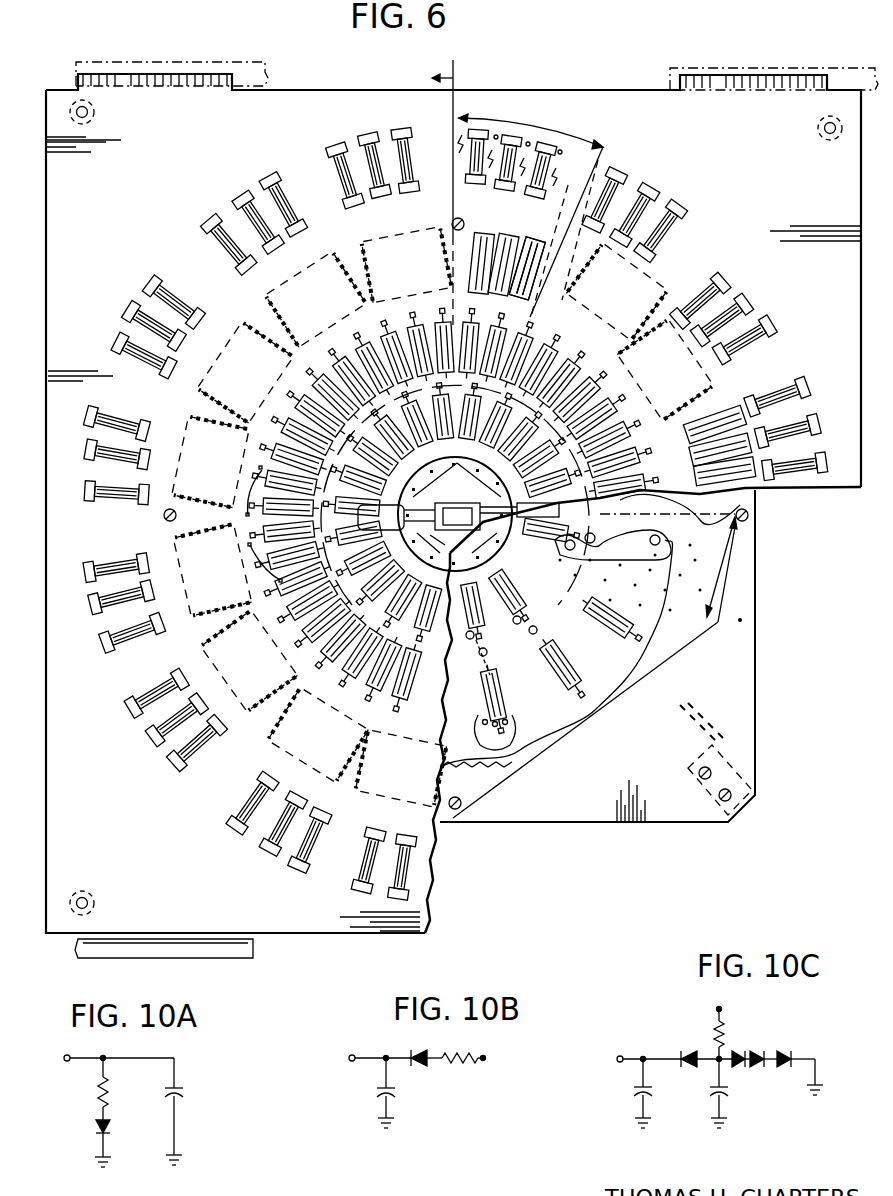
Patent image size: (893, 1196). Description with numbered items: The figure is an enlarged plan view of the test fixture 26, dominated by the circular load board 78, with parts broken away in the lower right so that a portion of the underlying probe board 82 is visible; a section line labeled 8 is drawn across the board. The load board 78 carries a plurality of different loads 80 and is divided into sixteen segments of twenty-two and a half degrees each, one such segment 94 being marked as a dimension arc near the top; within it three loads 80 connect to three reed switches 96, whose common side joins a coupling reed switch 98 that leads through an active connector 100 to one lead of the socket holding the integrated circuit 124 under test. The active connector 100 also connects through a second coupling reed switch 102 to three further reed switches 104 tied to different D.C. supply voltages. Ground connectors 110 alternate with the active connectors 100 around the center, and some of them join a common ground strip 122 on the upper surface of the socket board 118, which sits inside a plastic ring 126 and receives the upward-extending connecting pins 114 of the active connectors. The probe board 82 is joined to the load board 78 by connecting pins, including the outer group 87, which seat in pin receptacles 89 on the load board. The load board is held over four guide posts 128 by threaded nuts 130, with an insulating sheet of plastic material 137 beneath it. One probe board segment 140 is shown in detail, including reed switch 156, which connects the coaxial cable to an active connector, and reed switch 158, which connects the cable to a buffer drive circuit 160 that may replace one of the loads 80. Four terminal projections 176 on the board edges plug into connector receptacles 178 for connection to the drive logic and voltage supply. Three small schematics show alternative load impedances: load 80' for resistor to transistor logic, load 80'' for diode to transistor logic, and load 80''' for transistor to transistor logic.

In FIG. 6, the test fixture 26 is at (568, 72).
In FIG. 6, the load board 78 is at (295, 100).
In FIG. 6, the probe board 82 is at (750, 633).
In FIG. 6, the terminal projections 176 is at (172, 74).
In FIG. 6, the connector receptacles 178 is at (217, 955).
In FIG. 6, the section line 8 is at (452, 338).
In FIG. 6, the segment 94 is at (568, 133).
In FIG. 6, the reed switches 104 is at (512, 135).
In FIG. 6, the threaded nut 130 is at (452, 224).
In FIG. 6, the loads 80 is at (612, 347).
In FIG. 6, the buffer drive circuit 160 is at (530, 248).
In FIG. 6, the reed switches 96 is at (455, 330).
In FIG. 6, the coupling reed switch 98 is at (476, 405).
In FIG. 6, the active connector 100 is at (519, 436).
In FIG. 6, the second coupling reed switch 102 is at (428, 410).
In FIG. 6, the plastic ring 126 is at (362, 500).
In FIG. 6, the ground connectors 110 is at (455, 514).
In FIG. 6, the common ground strip 122 is at (396, 517).
In FIG. 6, the monolithic semiconductor integrated circuit 124 is at (513, 527).
In FIG. 6, the connecting pins 114 is at (434, 542).
In FIG. 6, the socket board 118 is at (643, 710).
In FIG. 6, the pin receptacles 89 is at (418, 722).
In FIG. 6, the connecting pins 87 is at (572, 639).
In FIG. 6, the reed switch 156 is at (527, 584).
In FIG. 6, the reed switch 158 is at (620, 597).
In FIG. 6, the guide posts 128 is at (749, 517).
In FIG. 6, the sheet of plastic material 137 is at (735, 528).
In FIG. 6, the segment 140 is at (720, 568).
In FIG. 10A, the load impedance 80' is at (149, 1111).
In FIG. 10B, the load impedance 80'' is at (435, 1088).
In FIG. 10C, the load impedance 80''' is at (720, 1057).